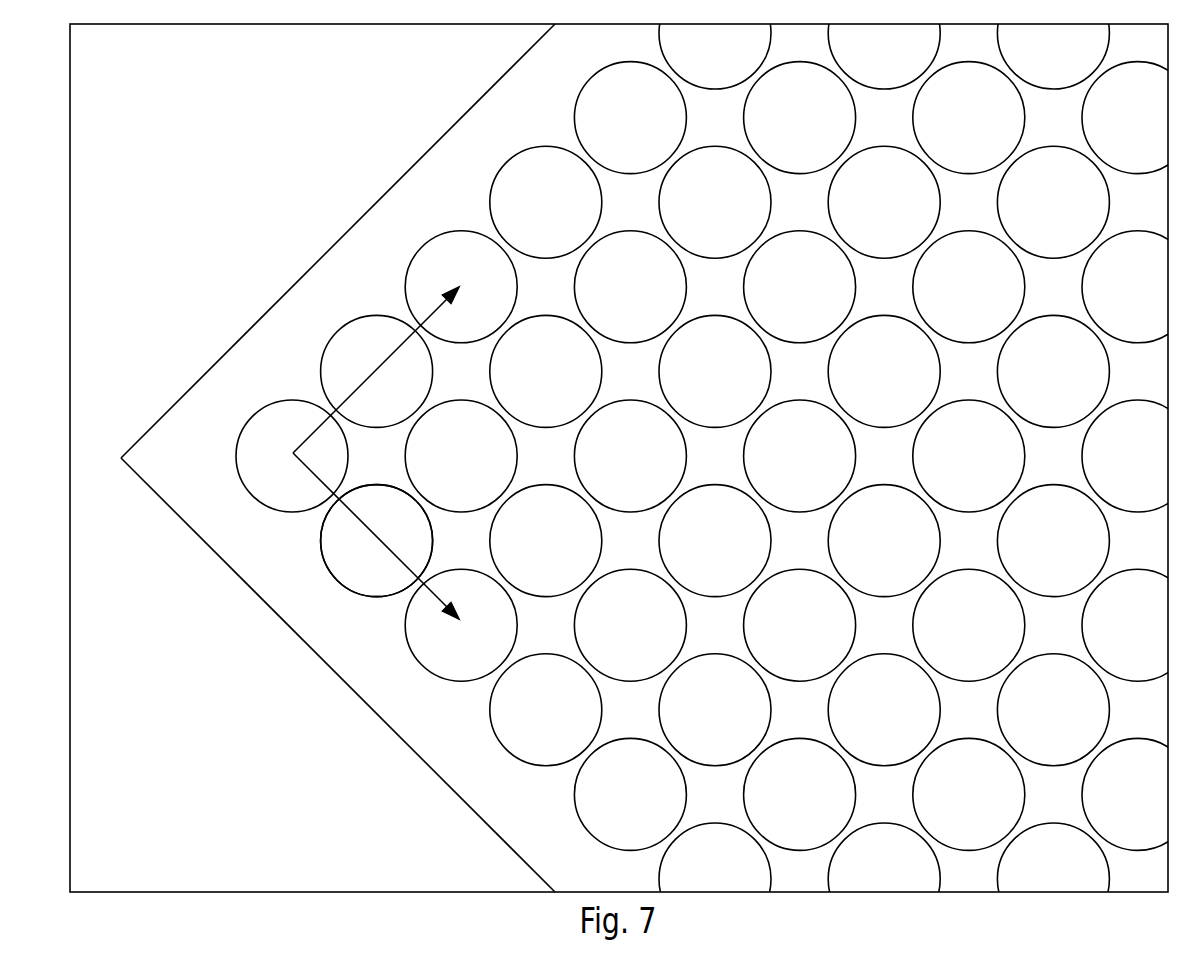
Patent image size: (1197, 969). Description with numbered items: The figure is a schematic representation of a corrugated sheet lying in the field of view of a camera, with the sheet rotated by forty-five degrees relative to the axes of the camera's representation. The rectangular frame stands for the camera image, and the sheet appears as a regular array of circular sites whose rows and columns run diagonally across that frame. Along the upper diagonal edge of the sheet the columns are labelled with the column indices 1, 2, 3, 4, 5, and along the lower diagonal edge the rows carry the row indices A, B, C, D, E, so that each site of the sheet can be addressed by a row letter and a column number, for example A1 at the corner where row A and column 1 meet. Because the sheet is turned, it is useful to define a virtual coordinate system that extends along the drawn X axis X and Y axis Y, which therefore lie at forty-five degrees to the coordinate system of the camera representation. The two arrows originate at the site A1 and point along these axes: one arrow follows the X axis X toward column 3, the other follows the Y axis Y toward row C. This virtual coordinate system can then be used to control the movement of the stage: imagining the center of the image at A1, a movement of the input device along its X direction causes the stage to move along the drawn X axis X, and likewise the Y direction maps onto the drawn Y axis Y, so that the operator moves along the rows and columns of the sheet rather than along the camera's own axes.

The X axis X is at (377, 371).
The Y axis Y is at (377, 541).
The column index of the corrugated sheet grid 1 is at (226, 386).
The column index of the corrugated sheet grid 2 is at (310, 302).
The column index of the corrugated sheet grid 3 is at (446, 270).
The column index of the corrugated sheet grid 4 is at (479, 134).
The column index of the corrugated sheet grid 5 is at (563, 50).
The row index of the corrugated sheet grid A is at (227, 521).
The row index of the corrugated sheet grid B is at (309, 604).
The row index of the corrugated sheet grid C is at (392, 688).
The row index of the corrugated sheet grid D is at (476, 772).
The row index of the corrugated sheet grid E is at (560, 856).